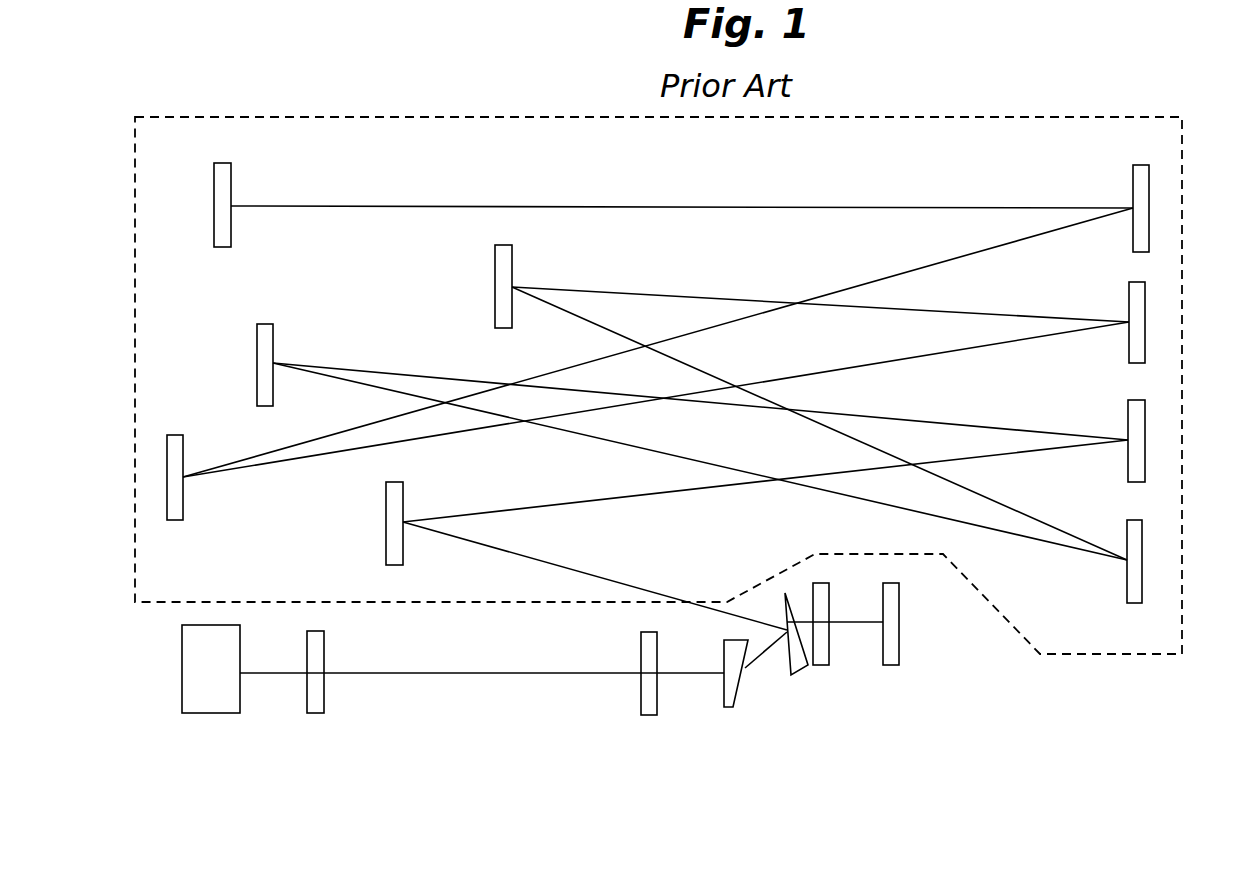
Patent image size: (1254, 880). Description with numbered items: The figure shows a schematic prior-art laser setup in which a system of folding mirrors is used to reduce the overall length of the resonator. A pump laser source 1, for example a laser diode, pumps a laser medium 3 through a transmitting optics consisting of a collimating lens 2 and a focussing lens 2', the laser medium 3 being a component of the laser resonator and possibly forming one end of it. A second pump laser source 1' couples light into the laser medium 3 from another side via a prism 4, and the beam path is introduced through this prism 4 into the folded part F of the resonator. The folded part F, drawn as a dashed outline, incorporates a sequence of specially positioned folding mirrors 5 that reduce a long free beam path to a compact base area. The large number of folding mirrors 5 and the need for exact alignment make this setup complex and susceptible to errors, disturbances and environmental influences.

The pump laser source 1 is at (257, 705).
The collimating lens 2 is at (362, 684).
The focussing lens 2' is at (605, 703).
The laser medium 3 is at (690, 719).
The prism 4 is at (852, 670).
The folding mirrors 5 is at (705, 392).
The second pump laser source 1' is at (941, 643).
The folded part of the resonator F is at (658, 439).